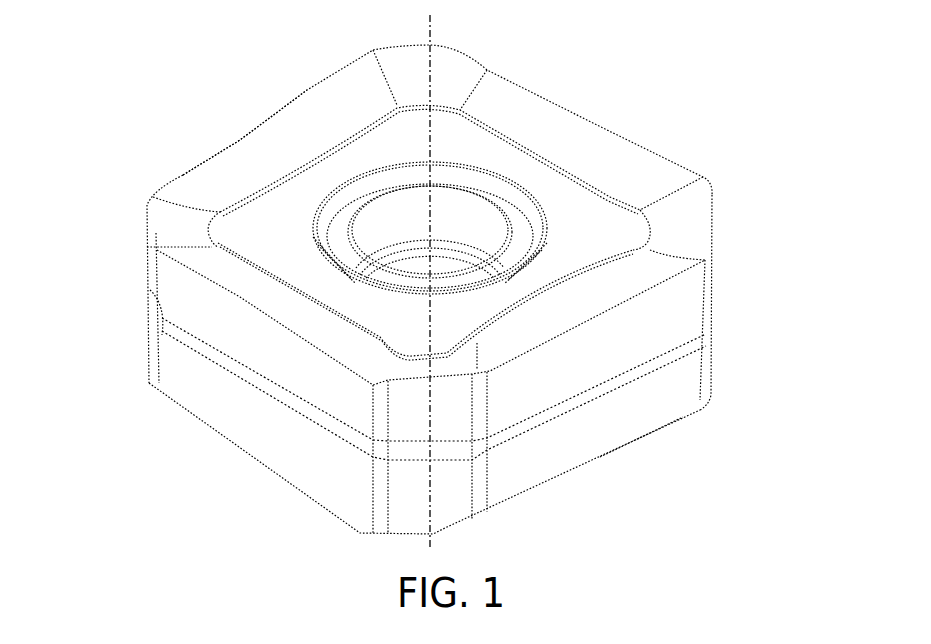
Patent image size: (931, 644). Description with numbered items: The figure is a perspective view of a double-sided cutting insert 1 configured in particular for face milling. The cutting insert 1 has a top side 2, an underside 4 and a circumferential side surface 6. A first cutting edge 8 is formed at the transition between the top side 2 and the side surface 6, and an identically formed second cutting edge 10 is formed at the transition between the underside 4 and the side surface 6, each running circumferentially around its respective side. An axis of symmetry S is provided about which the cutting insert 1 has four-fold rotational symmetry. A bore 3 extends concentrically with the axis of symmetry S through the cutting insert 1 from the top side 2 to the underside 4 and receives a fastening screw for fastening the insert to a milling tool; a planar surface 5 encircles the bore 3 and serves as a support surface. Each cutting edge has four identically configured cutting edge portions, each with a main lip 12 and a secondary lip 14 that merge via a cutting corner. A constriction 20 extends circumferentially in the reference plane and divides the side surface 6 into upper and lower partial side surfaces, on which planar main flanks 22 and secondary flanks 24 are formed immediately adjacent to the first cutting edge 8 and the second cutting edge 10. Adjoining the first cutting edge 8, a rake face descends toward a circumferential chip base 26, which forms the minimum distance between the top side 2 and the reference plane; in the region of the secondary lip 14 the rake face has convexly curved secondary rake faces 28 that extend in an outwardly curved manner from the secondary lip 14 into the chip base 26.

The double-sided cutting insert 1 is at (173, 126).
The top side 2 is at (566, 194).
The bore 3 is at (483, 232).
The underside 4 is at (659, 440).
The planar surface 5 is at (497, 147).
The circumferential side surface 6 is at (147, 346).
The first cutting edge 8 is at (183, 178).
The second cutting edge 10 is at (318, 498).
The main lip 12 is at (603, 313).
The secondary lip 14 is at (443, 377).
The constriction 20 is at (223, 363).
The main flank 22 is at (280, 372).
The secondary flank 24 is at (405, 413).
The chip base 26 is at (348, 137).
The secondary rake face 28 is at (167, 225).
The axis of symmetry S is at (432, 33).